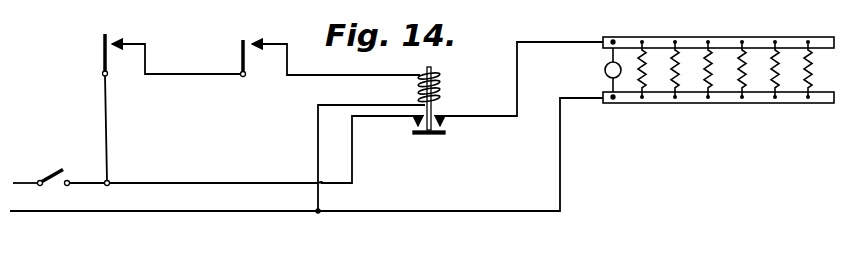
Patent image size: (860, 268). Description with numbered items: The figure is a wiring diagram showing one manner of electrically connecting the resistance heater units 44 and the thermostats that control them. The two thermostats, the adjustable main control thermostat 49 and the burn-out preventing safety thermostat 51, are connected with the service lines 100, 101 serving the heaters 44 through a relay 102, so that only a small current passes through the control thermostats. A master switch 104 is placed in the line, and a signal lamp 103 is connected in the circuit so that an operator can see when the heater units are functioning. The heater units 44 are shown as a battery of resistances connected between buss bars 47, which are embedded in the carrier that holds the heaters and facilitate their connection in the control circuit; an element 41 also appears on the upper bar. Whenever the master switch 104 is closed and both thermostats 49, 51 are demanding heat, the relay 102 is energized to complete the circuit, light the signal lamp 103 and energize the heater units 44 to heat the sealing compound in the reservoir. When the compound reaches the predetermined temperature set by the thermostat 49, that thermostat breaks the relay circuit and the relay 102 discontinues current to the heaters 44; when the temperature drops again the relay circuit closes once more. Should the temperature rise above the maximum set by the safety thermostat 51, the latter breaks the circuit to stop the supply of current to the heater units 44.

The upper bus bar 41 is at (720, 39).
The electrical resistance heater units 44 is at (706, 72).
The buss bars 47 is at (762, 100).
The adjustable thermostat 49 is at (232, 56).
The safety thermostat 51 is at (97, 45).
The service line 100 is at (217, 167).
The service line 101 is at (272, 211).
The relay 102 is at (446, 96).
The signal lamp 103 is at (604, 70).
The master switch 104 is at (52, 171).